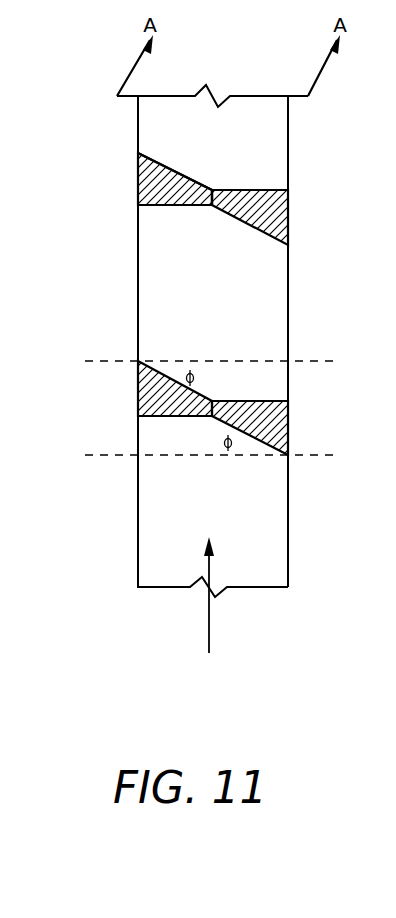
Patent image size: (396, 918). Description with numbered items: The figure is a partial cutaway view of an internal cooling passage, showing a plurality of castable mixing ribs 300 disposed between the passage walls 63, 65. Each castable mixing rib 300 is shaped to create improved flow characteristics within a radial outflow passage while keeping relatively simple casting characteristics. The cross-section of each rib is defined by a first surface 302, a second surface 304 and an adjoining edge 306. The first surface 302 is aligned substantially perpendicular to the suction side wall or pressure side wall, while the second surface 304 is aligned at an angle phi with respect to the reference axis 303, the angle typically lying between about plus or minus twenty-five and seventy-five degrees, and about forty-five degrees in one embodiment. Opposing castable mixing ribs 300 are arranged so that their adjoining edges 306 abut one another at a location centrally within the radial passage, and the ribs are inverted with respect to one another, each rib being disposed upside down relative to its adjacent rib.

The inner duct wall 65 is at (138, 268).
The outer duct wall 63 is at (288, 280).
The first surface 302 is at (147, 205).
The castable mixing rib 300 is at (283, 220).
The second surface 304 is at (182, 174).
The adjoining edge 306 is at (214, 188).
The reference axis 303 is at (190, 408).